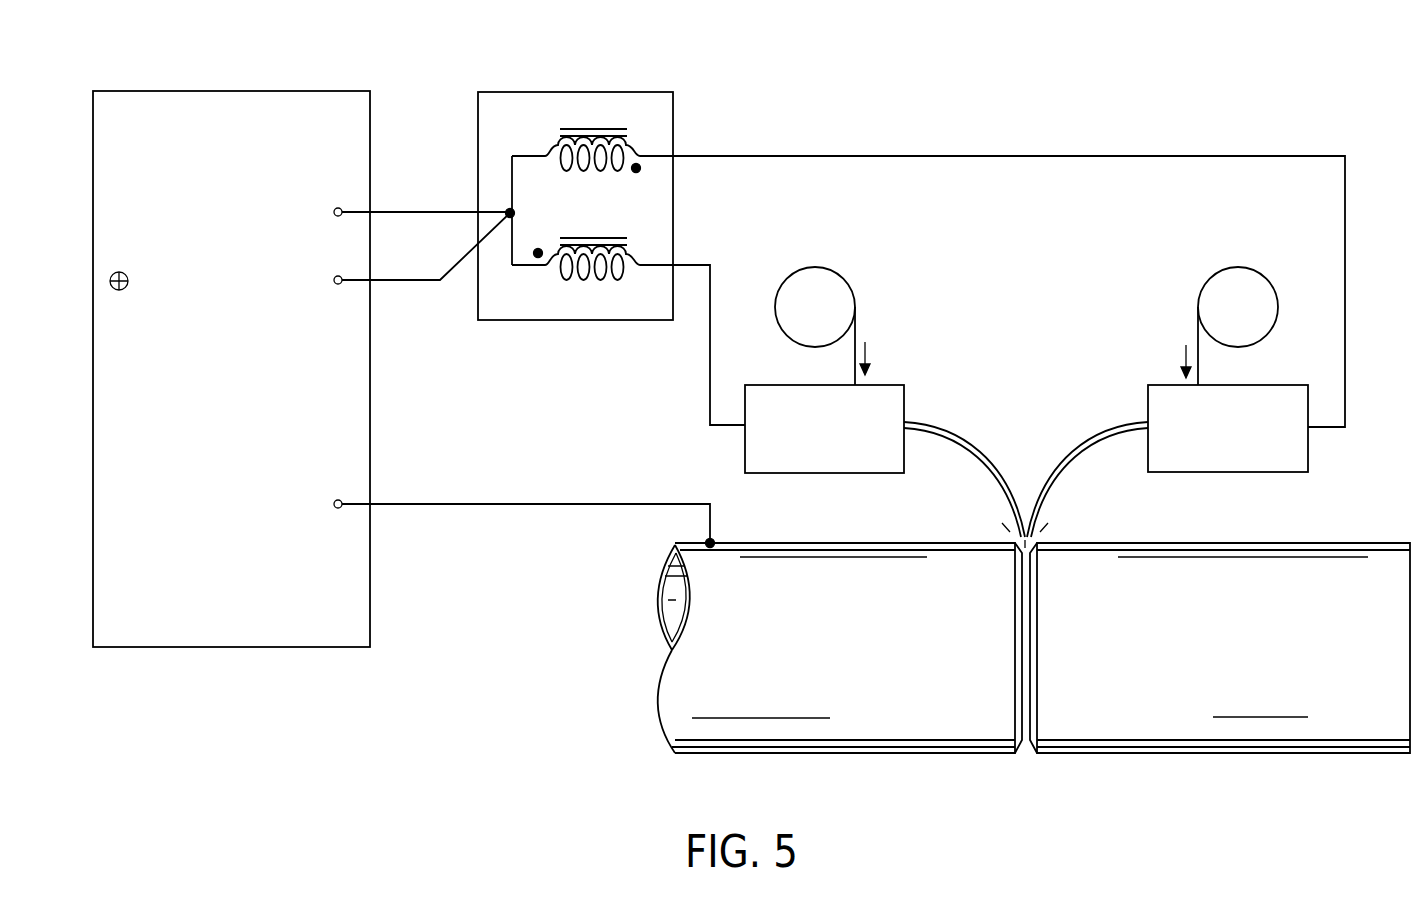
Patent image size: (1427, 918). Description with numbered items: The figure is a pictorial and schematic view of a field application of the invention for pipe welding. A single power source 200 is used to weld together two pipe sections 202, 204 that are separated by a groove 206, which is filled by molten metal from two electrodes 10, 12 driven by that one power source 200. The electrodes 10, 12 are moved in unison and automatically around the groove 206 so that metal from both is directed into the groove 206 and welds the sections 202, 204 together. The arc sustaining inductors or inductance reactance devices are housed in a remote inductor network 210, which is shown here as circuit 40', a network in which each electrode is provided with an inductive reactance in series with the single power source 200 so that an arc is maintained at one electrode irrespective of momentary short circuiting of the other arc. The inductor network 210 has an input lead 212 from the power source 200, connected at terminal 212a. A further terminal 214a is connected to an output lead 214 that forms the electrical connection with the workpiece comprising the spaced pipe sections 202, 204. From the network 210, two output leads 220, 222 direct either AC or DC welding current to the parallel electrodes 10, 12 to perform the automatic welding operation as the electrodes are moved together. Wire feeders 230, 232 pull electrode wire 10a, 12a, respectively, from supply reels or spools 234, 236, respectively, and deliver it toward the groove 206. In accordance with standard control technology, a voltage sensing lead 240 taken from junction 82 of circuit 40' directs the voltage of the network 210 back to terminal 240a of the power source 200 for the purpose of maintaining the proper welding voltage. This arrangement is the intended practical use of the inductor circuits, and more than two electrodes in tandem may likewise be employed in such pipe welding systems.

The power source 200 is at (299, 90).
The inductor network 210 is at (654, 89).
The circuit 40' is at (576, 159).
The junction 82 is at (514, 212).
The input lead 212 is at (398, 212).
The terminal 212a is at (342, 208).
The voltage sensing lead 240 is at (420, 283).
The terminal 240a is at (337, 285).
The output lead 214 is at (468, 507).
The terminal 214a is at (345, 500).
The output lead 220 is at (713, 288).
The output lead 222 is at (1087, 158).
The wire feeder 230 is at (898, 385).
The wire feeder 232 is at (1160, 385).
The supply reel or spool 234 is at (843, 272).
The supply reel or spool 236 is at (1246, 268).
The electrode wire 10a is at (860, 337).
The electrode wire 12a is at (1203, 367).
The electrode 10 is at (1000, 482).
The electrode 12 is at (1053, 478).
The pipe section 202 is at (705, 673).
The pipe section 204 is at (1133, 755).
The separating groove 206 is at (1030, 755).